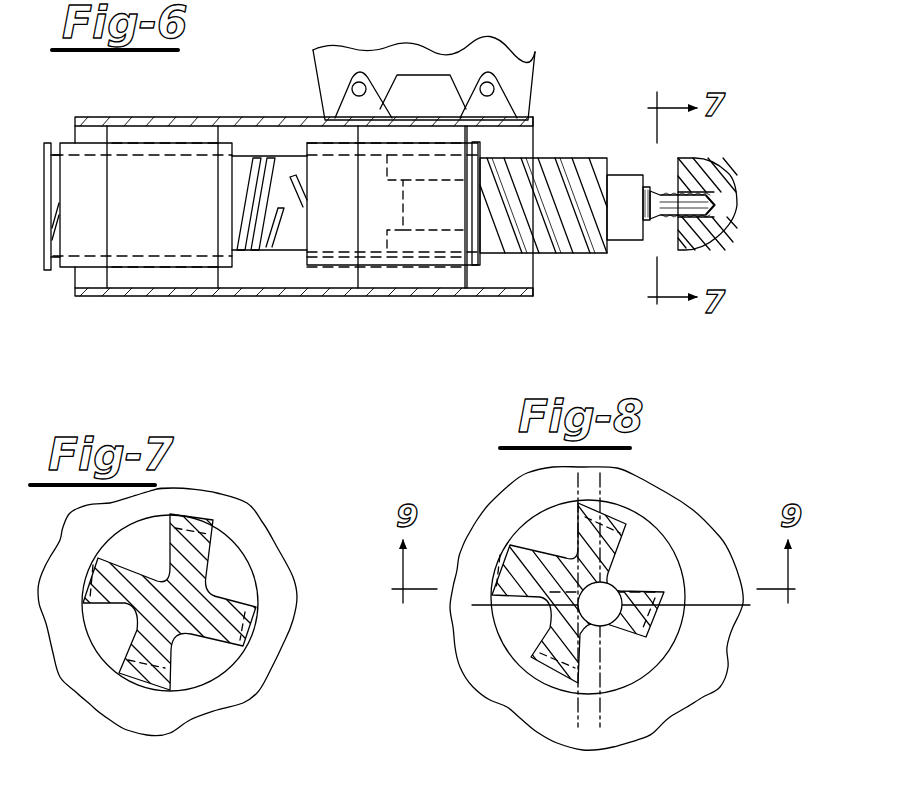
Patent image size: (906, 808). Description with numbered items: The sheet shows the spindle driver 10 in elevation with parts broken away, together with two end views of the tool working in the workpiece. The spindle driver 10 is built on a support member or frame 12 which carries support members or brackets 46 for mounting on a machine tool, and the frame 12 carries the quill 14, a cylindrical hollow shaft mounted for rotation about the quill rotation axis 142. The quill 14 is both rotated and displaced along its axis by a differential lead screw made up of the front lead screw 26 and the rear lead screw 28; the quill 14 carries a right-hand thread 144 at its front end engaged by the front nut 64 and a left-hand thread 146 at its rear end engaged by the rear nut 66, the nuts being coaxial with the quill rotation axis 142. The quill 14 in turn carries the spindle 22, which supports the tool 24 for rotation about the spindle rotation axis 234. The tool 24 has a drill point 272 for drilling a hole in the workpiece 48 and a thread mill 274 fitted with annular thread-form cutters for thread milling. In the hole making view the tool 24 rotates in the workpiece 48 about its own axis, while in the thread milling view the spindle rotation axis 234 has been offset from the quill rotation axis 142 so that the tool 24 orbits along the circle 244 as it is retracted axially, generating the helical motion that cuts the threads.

In FIG. 6, the spindle driver 10 is at (272, 70).
In FIG. 6, the support member or frame 12 is at (268, 306).
In FIG. 6, the quill 14 is at (603, 165).
In FIG. 6, the spindle 22 is at (651, 186).
In FIG. 6, the tool 24 is at (727, 213).
In FIG. 7, the tool 24 is at (238, 602).
In FIG. 8, the tool 24 is at (623, 503).
In FIG. 6, the front lead screw 26 is at (472, 276).
In FIG. 6, the rear lead screw 28 is at (96, 276).
In FIG. 6, the support members or brackets 46 is at (330, 106).
In FIG. 6, the workpiece 48 is at (718, 163).
In FIG. 7, the workpiece 48 is at (248, 502).
In FIG. 8, the workpiece 48 is at (697, 515).
In FIG. 6, the front nut 64 is at (448, 284).
In FIG. 6, the rear nut 66 is at (190, 282).
In FIG. 8, the quill rotation axis 142 is at (642, 686).
In FIG. 6, the right-hand thread 144 is at (523, 167).
In FIG. 6, the left-hand thread 146 is at (250, 232).
In FIG. 8, the spindle rotation axis 234 is at (545, 628).
In FIG. 8, the circle 244 is at (601, 627).
In FIG. 6, the drill point 272 is at (710, 195).
In FIG. 6, the thread mill 274 is at (682, 226).